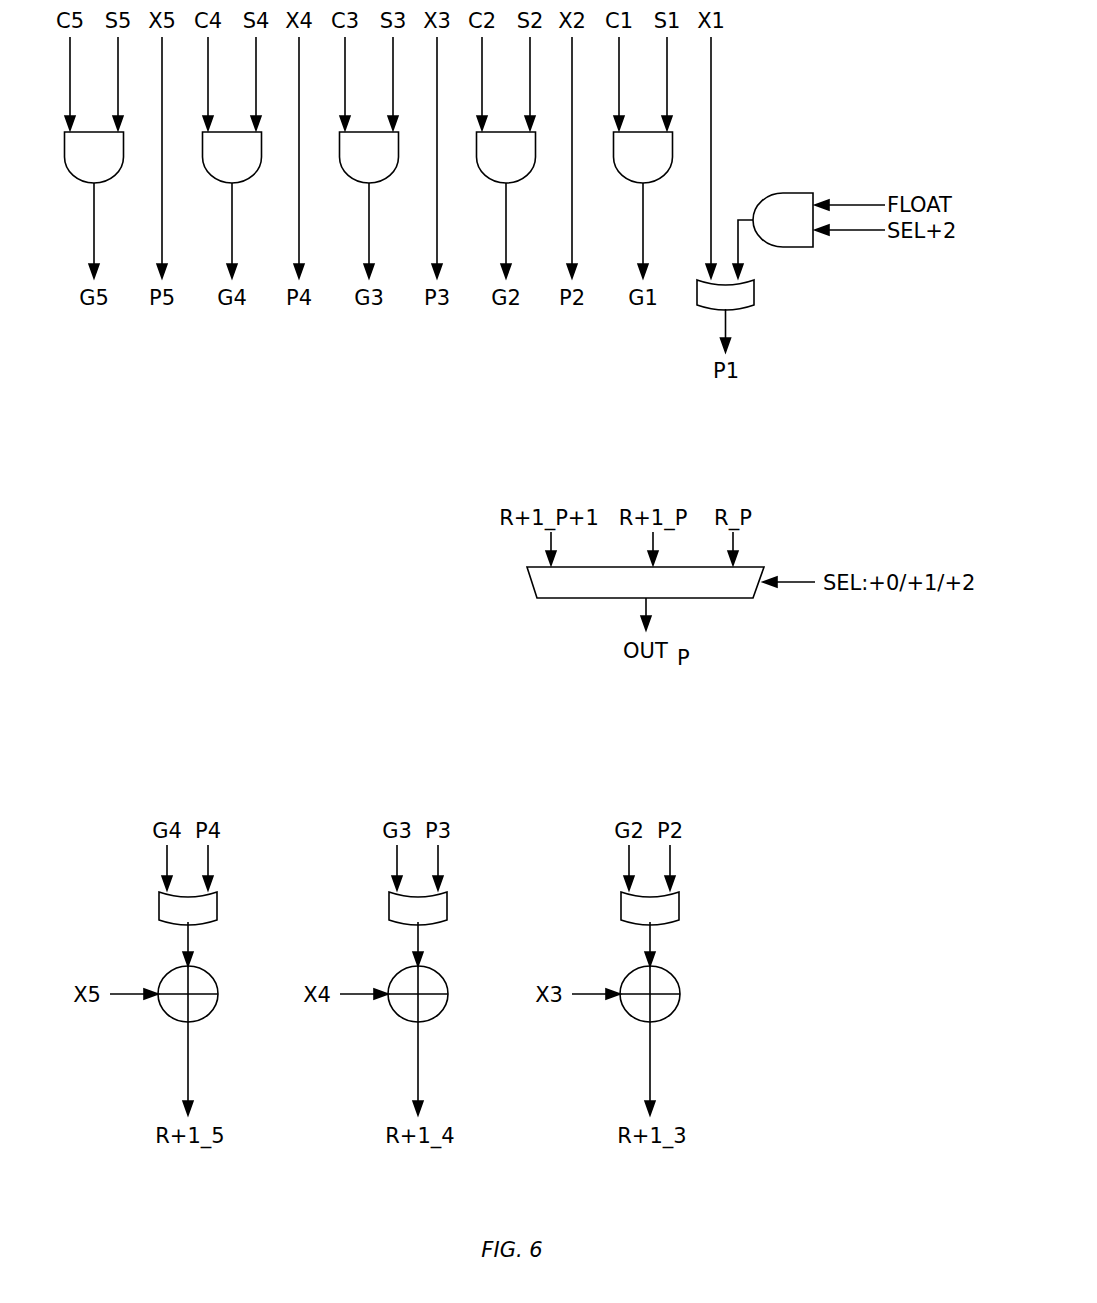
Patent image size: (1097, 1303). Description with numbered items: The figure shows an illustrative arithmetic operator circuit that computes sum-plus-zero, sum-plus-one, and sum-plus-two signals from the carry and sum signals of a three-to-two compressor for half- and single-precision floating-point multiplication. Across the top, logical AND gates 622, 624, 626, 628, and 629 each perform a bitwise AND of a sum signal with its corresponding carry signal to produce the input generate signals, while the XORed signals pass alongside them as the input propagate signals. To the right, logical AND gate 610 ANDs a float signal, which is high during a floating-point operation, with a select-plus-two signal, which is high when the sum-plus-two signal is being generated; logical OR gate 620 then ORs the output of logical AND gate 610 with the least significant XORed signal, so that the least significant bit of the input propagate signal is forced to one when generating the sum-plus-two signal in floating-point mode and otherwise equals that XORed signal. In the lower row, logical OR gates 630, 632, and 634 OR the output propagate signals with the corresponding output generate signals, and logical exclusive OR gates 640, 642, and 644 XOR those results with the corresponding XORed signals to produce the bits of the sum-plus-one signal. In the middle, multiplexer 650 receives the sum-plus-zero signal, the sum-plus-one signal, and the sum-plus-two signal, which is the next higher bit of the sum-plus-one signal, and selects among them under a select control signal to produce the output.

The logical AND gate 610 is at (786, 192).
The logical OR gate 620 is at (754, 290).
The logical AND gate 622 is at (649, 183).
The logical AND gate 624 is at (512, 183).
The logical AND gate 626 is at (375, 183).
The logical AND gate 628 is at (238, 183).
The logical AND gate 629 is at (100, 183).
The logical OR gate 630 is at (620, 905).
The logical OR gate 632 is at (388, 905).
The logical OR gate 634 is at (158, 905).
The logical exclusive OR gate 640 is at (632, 1017).
The logical exclusive OR gate 642 is at (400, 1017).
The logical exclusive OR gate 644 is at (170, 1017).
The multiplexer 650 is at (625, 594).